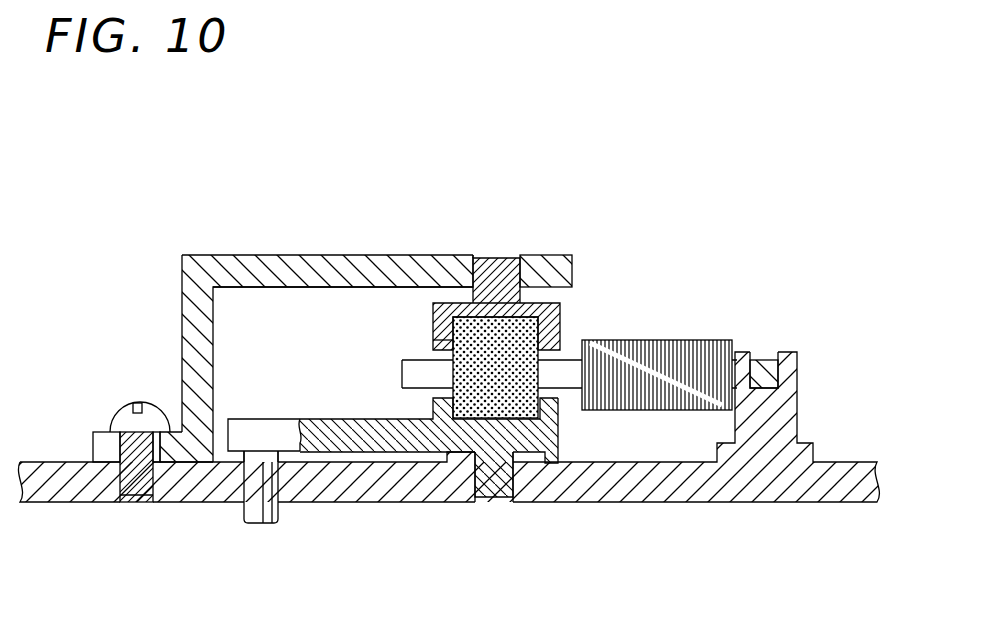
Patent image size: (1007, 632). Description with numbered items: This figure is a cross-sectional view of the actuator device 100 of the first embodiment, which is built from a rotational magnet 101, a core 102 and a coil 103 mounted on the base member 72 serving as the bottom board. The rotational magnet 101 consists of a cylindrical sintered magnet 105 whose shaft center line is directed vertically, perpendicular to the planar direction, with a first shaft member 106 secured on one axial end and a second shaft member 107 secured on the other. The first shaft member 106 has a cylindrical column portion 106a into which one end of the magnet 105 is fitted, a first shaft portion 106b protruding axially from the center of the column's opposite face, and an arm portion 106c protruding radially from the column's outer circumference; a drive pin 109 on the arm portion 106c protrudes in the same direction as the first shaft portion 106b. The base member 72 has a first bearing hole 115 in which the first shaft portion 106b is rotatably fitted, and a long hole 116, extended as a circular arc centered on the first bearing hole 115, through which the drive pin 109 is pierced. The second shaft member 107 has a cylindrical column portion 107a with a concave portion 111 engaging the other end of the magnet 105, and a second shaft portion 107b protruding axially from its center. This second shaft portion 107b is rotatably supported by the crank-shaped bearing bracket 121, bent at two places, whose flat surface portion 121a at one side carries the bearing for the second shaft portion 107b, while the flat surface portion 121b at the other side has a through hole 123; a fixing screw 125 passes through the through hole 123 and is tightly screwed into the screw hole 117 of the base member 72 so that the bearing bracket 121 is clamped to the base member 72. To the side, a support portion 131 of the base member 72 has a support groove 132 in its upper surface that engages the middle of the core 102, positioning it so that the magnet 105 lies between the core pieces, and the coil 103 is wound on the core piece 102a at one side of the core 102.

The base member 72 is at (363, 502).
The actuator device 100 is at (468, 242).
The rotational magnet 101 is at (418, 310).
The core 102 is at (760, 360).
The core piece 102a is at (575, 358).
The coil 103 is at (710, 340).
The magnet 105 is at (543, 317).
The first shaft member 106 is at (450, 462).
The cylindrical column portion 106a is at (560, 440).
The first shaft portion 106b is at (495, 503).
The arm portion 106c is at (260, 432).
The second shaft member 107 is at (478, 263).
The cylindrical column portion 107a is at (440, 318).
The second shaft portion 107b is at (510, 258).
The drive pin 109 is at (260, 525).
The concave portion 111 is at (445, 340).
The first bearing hole 115 is at (483, 507).
The long hole 116 is at (247, 502).
The screw hole 117 is at (135, 502).
The bearing bracket 121 is at (320, 297).
The flat surface portion 121a is at (302, 255).
The flat surface portion 121b is at (108, 432).
The through hole 123 is at (93, 445).
The fixing screw 125 is at (155, 403).
The support portion 131 is at (807, 338).
The support groove 132 is at (768, 352).